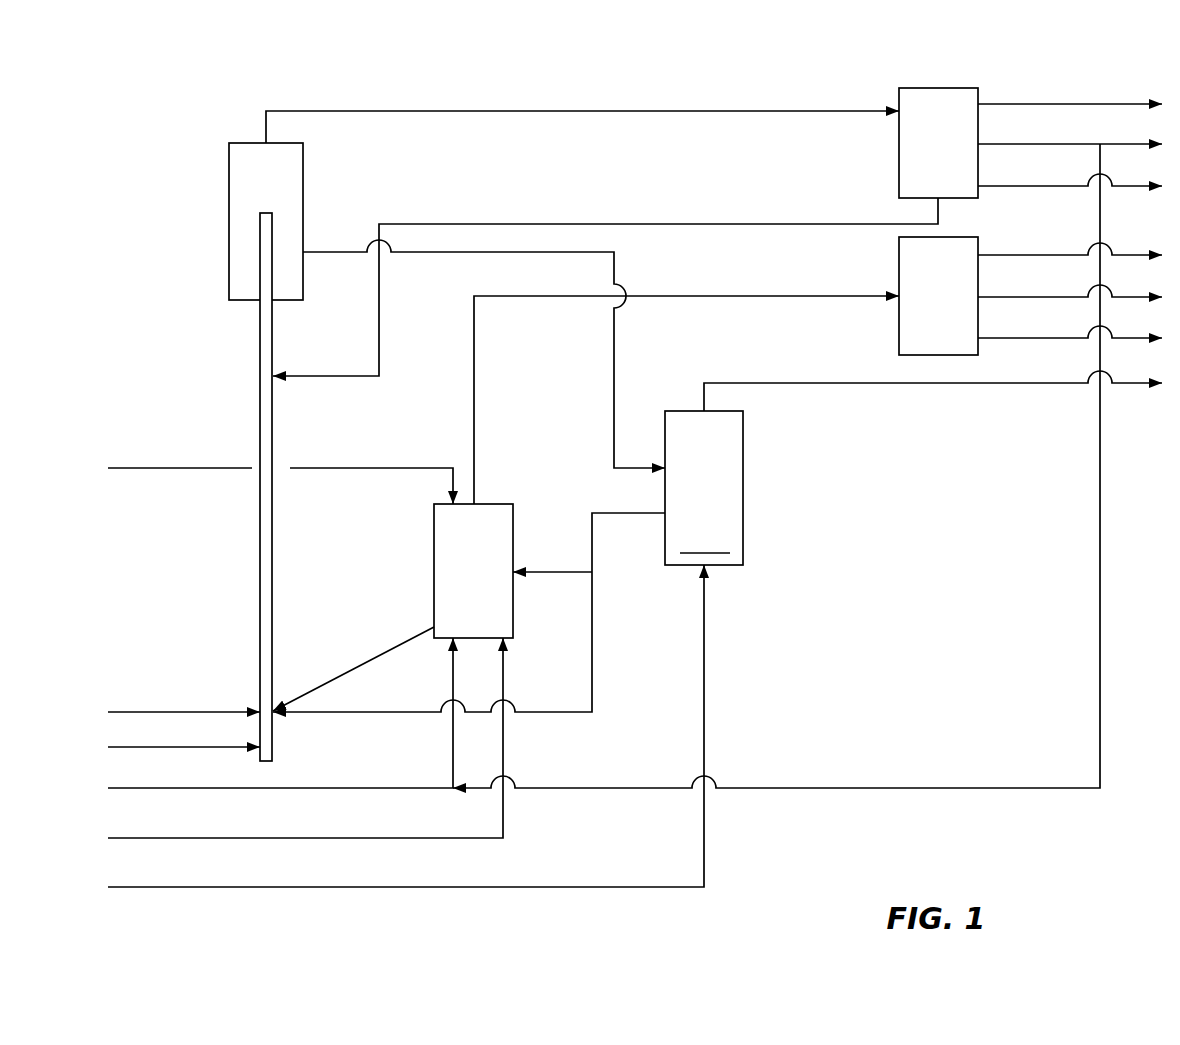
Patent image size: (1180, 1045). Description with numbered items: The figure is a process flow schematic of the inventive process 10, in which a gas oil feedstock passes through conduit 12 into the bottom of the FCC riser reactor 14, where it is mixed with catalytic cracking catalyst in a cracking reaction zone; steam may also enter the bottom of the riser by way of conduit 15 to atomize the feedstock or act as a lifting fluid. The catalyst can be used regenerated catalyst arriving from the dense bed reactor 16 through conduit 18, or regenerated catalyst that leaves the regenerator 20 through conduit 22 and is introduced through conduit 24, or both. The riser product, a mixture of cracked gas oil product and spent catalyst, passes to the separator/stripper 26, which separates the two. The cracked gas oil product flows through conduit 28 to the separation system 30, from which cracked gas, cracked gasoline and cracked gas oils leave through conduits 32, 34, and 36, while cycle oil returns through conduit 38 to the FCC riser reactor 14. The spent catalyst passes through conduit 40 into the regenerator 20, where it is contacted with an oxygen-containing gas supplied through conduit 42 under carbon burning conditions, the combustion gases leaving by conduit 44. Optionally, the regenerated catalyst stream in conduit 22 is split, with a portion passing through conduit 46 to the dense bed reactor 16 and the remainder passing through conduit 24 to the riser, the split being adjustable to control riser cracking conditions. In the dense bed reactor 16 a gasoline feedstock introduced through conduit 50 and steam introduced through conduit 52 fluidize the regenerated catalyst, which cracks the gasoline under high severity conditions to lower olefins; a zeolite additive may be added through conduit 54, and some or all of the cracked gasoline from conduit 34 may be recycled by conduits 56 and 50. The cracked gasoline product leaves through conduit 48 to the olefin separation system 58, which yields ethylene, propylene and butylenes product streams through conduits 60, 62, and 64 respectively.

The inventive process 10 is at (373, 68).
The conduit 12 is at (160, 712).
The FCC riser reactor 14 is at (260, 535).
The conduit 15 is at (160, 747).
The dense bed reactor 16 is at (434, 548).
The conduit 18 is at (355, 665).
The regenerator 20 is at (743, 440).
The conduit 22 is at (664, 513).
The conduit 24 is at (383, 712).
The separator/stripper 26 is at (229, 217).
The conduit 28 is at (470, 111).
The separation system 30 is at (899, 100).
The conduit 32 is at (1010, 104).
The conduit 34 is at (1010, 144).
The conduit 36 is at (1010, 186).
The conduit 38 is at (540, 224).
The conduit 40 is at (613, 352).
The conduit 42 is at (363, 887).
The conduit 44 is at (812, 383).
The conduit 46 is at (557, 572).
The conduit 48 is at (720, 296).
The conduit 50 is at (320, 788).
The conduit 52 is at (320, 838).
The conduit 54 is at (140, 468).
The conduit 56 is at (925, 788).
The olefin separation system 58 is at (899, 268).
The conduit 60 is at (1010, 255).
The conduit 62 is at (1010, 297).
The conduit 64 is at (1010, 338).